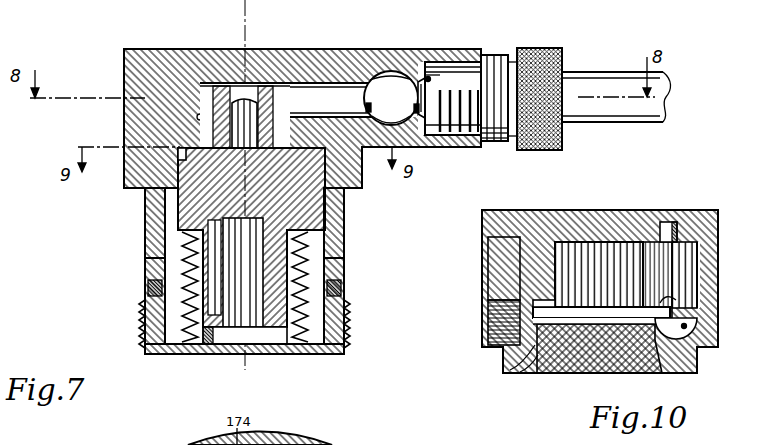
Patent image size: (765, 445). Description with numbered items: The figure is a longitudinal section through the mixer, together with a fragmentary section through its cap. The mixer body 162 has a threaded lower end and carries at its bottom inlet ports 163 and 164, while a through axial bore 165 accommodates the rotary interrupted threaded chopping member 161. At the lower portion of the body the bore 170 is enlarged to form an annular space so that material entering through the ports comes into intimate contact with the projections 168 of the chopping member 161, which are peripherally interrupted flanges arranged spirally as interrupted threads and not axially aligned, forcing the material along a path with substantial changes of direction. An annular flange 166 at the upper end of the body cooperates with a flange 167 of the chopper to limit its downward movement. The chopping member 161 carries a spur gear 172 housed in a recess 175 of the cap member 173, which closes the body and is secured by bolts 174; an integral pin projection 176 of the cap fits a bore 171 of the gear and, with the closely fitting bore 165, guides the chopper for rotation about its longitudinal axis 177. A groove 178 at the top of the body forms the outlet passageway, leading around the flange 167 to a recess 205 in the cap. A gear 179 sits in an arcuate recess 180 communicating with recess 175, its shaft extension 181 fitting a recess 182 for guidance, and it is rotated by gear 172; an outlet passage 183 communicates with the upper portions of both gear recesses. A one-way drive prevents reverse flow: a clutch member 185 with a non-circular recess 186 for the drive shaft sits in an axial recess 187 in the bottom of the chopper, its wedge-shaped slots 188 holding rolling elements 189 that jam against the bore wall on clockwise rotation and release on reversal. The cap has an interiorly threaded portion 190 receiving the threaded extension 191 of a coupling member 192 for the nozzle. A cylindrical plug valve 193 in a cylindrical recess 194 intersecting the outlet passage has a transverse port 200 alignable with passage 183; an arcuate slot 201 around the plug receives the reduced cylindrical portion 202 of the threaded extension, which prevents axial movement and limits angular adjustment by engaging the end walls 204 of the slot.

In FIG. 7, the recess 175 is at (197, 117).
In FIG. 10, the recess 175 is at (532, 238).
In FIG. 7, the cap member 173 is at (170, 82).
In FIG. 7, the longitudinal axis 177 is at (246, 23).
In FIG. 7, the spur gear 172 is at (275, 106).
In FIG. 10, the spur gear 172 is at (576, 282).
In FIG. 7, the pin projection 176 is at (233, 108).
In FIG. 7, the outlet passage 183 is at (305, 87).
In FIG. 7, the end walls 204 is at (366, 107).
In FIG. 7, the transverse port 200 is at (392, 98).
In FIG. 7, the cylindrical recess 194 is at (388, 84).
In FIG. 7, the interiorly threaded portion 190 is at (462, 68).
In FIG. 7, the arcuate slot 201 is at (420, 80).
In FIG. 7, the reduced cylindrical portion 202 is at (430, 76).
In FIG. 7, the threaded extension 191 is at (494, 72).
In FIG. 7, the coupling member 192 is at (540, 48).
In FIG. 7, the plug valve 193 is at (387, 122).
In FIG. 7, the bore 171 is at (251, 237).
In FIG. 7, the non-circular recess 186 is at (250, 330).
In FIG. 7, the slots 188 is at (212, 262).
In FIG. 7, the rolling elements 189 is at (211, 248).
In FIG. 7, the axial recess 187 is at (208, 344).
In FIG. 7, the mixer body 162 is at (346, 200).
In FIG. 10, the mixer body 162 is at (503, 362).
In FIG. 7, the bore 170 is at (346, 264).
In FIG. 7, the clutch member 185 is at (231, 330).
In FIG. 7, the inlet port 163 is at (147, 316).
In FIG. 7, the inlet port 164 is at (347, 314).
In FIG. 7, the projections 168 is at (183, 240).
In FIG. 10, the projections 168 is at (512, 368).
In FIG. 7, the axial bore 165 is at (186, 205).
In FIG. 10, the axial bore 165 is at (662, 342).
In FIG. 7, the chopping member 161 is at (186, 213).
In FIG. 10, the chopping member 161 is at (556, 374).
In FIG. 7, the annular flange 166 is at (172, 154).
In FIG. 10, the annular flange 166 is at (536, 306).
In FIG. 7, the flange 167 is at (332, 164).
In FIG. 10, the flange 167 is at (622, 320).
In FIG. 10, the bolts 174 is at (490, 213).
In FIG. 10, the gear 179 is at (680, 268).
In FIG. 10, the arcuate recess 180 is at (699, 252).
In FIG. 10, the shaft extension 181 is at (663, 224).
In FIG. 10, the recess 182 is at (683, 226).
In FIG. 10, the recess 205 is at (668, 298).
In FIG. 10, the groove 178 is at (698, 349).